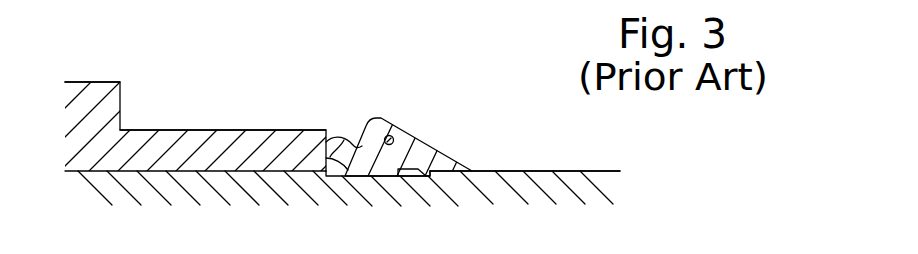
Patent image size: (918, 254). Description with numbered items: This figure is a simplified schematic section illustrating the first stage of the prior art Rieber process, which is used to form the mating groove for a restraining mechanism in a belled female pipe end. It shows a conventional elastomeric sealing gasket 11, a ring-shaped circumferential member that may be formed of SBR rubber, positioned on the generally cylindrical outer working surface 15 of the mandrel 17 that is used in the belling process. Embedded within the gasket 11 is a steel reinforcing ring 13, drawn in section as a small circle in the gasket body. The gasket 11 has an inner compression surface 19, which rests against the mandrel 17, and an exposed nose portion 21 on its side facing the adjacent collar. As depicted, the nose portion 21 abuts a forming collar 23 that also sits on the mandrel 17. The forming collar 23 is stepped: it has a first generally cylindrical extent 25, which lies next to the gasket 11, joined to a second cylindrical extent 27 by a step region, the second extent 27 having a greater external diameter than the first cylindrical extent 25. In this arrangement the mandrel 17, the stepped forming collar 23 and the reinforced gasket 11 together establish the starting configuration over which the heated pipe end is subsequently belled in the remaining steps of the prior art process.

The elastomeric sealing gasket 11 is at (430, 157).
The steel reinforcing ring 13 is at (393, 139).
The outer working surface 15 is at (533, 169).
The mandrel 17 is at (601, 179).
The inner compression surface 19 is at (375, 177).
The nose portion 21 is at (330, 152).
The forming collar 23 is at (248, 143).
The first generally cylindrical extent 25 is at (192, 130).
The second cylindrical extent 27 is at (88, 82).